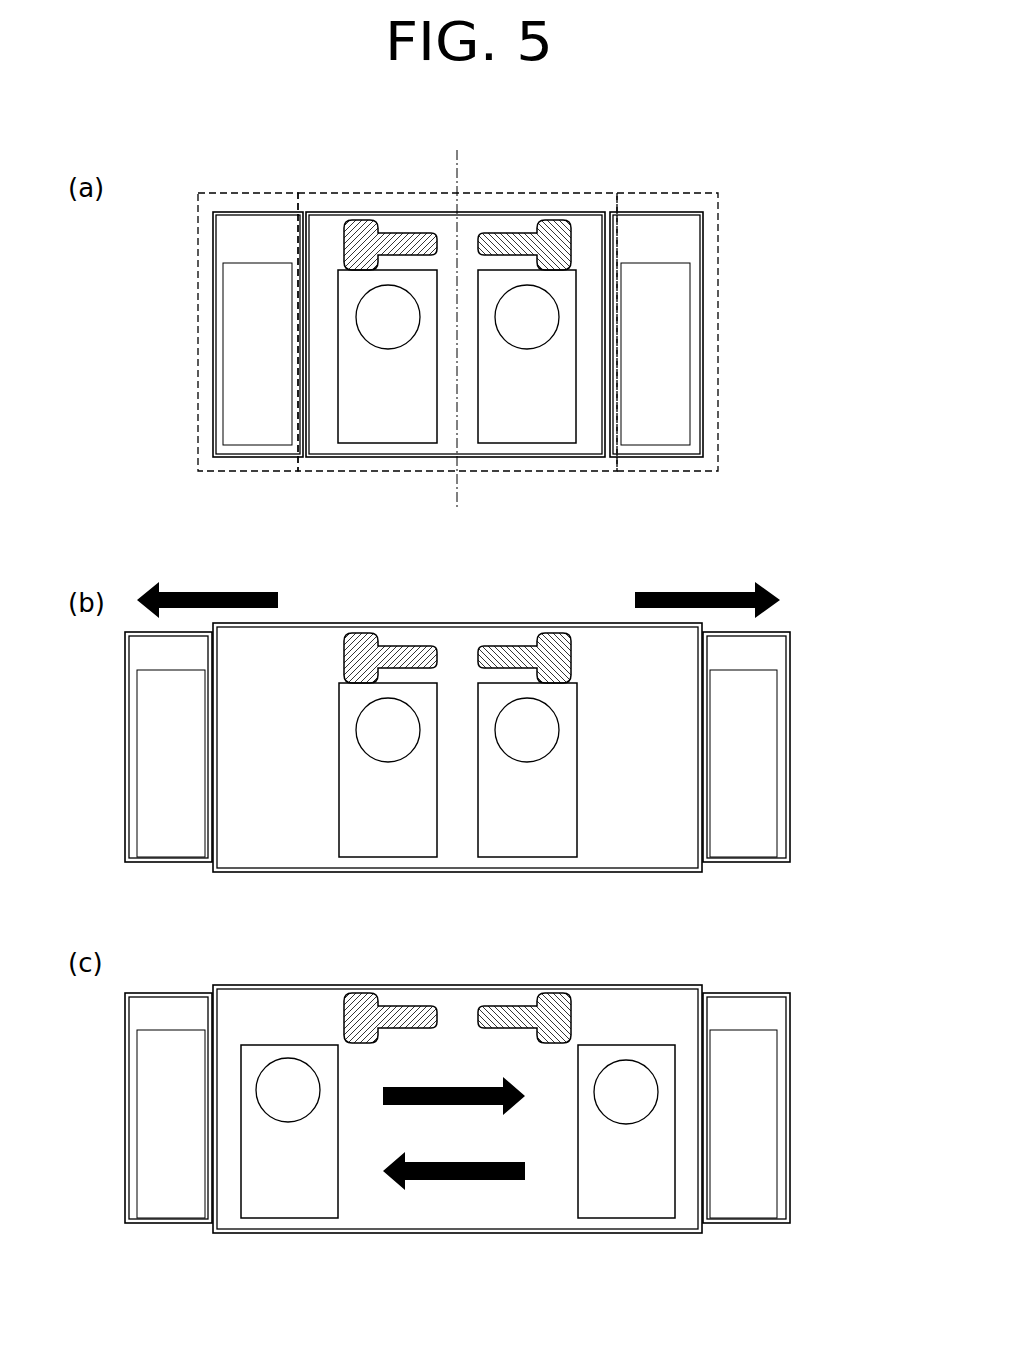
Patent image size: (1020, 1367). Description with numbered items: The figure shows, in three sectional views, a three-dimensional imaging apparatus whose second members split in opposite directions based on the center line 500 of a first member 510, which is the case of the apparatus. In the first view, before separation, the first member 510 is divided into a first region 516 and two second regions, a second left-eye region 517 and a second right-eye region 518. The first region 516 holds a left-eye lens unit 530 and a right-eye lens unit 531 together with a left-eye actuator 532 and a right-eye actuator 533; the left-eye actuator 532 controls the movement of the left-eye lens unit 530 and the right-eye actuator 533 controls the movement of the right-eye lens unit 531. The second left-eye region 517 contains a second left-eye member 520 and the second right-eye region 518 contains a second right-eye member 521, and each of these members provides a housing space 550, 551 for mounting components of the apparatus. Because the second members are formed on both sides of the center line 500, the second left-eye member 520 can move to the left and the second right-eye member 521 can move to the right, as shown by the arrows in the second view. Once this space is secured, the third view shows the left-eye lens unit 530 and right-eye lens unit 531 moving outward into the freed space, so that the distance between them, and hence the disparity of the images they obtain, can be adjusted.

The center line 500 is at (438, 190).
The first member 510 is at (495, 210).
The first region 516 is at (472, 470).
The second left-eye region 517 is at (197, 272).
The second right-eye region 518 is at (717, 270).
The second left-eye member 520 is at (253, 236).
The second right-eye member 521 is at (663, 236).
The left-eye lens unit 530 is at (376, 413).
The right-eye lens unit 531 is at (540, 413).
The left-eye actuator 532 is at (359, 238).
The right-eye actuator 533 is at (553, 236).
The housing space 550 is at (250, 372).
The housing space 551 is at (663, 372).